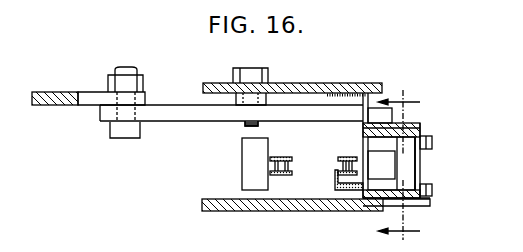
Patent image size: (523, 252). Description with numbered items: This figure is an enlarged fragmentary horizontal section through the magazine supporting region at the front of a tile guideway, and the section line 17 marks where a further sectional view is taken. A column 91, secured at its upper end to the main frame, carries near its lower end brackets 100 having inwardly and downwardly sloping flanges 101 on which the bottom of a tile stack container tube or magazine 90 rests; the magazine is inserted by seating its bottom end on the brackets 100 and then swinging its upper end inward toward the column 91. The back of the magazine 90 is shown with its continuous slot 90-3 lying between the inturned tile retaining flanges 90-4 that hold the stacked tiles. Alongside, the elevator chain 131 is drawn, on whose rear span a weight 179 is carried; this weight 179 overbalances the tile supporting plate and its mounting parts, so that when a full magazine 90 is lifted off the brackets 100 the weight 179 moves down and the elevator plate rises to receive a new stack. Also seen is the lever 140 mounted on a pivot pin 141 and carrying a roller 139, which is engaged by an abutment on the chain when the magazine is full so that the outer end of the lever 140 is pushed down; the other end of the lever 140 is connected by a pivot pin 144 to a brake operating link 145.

The lever 140 is at (178, 105).
The brake operating link 145 is at (65, 92).
The pivot pin 144 is at (131, 127).
The column 91 is at (315, 83).
The pivot pin 141 is at (245, 123).
The weight 179 is at (245, 163).
The elevator chain 131 is at (333, 165).
The continuous slot 90-3 is at (367, 150).
The inturned tile retaining flanges 90-4 is at (365, 138).
The roller 139 is at (391, 149).
The magazine 90 is at (420, 178).
The brackets 100 is at (433, 136).
The inwardly and downwardly sloping flanges 101 is at (430, 128).
The section line 17- 17 is at (411, 165).